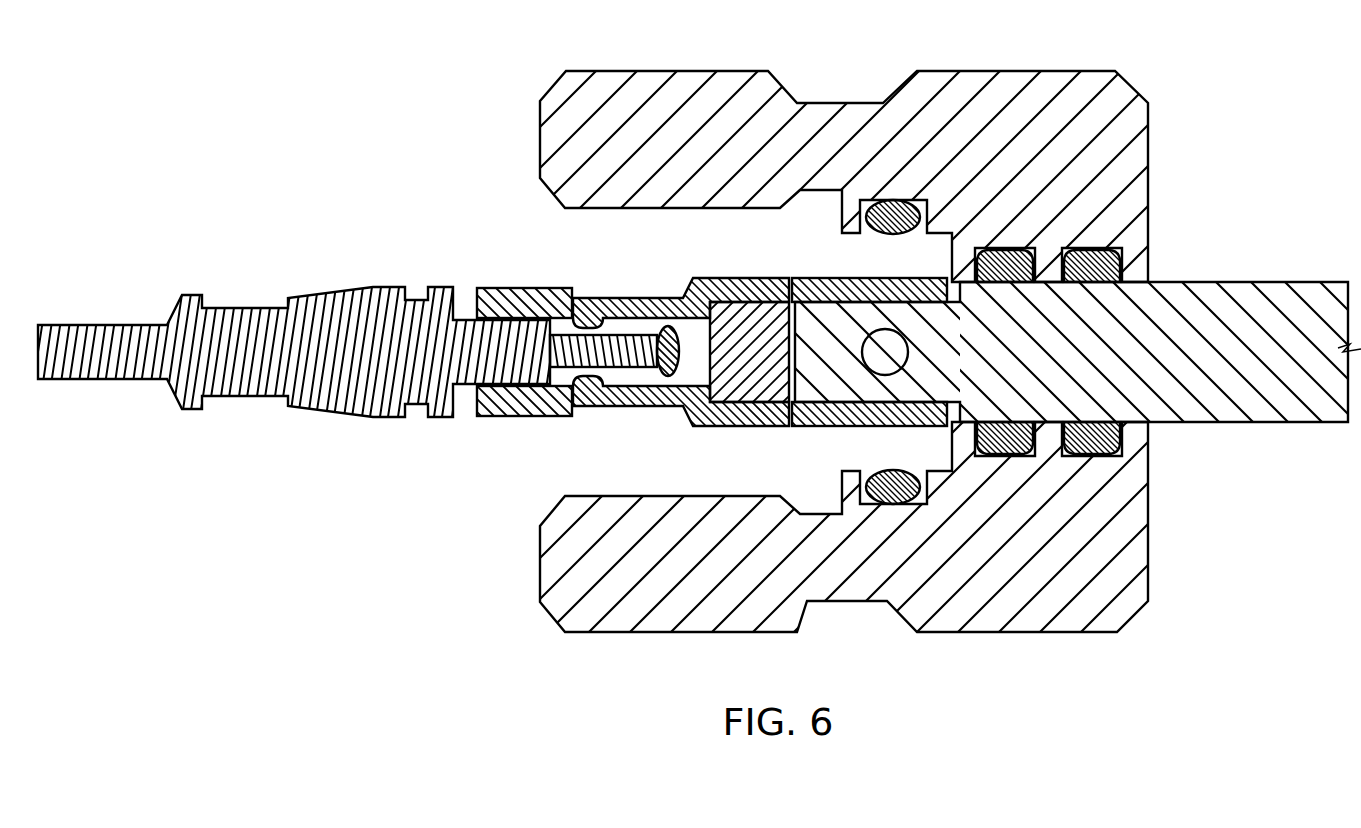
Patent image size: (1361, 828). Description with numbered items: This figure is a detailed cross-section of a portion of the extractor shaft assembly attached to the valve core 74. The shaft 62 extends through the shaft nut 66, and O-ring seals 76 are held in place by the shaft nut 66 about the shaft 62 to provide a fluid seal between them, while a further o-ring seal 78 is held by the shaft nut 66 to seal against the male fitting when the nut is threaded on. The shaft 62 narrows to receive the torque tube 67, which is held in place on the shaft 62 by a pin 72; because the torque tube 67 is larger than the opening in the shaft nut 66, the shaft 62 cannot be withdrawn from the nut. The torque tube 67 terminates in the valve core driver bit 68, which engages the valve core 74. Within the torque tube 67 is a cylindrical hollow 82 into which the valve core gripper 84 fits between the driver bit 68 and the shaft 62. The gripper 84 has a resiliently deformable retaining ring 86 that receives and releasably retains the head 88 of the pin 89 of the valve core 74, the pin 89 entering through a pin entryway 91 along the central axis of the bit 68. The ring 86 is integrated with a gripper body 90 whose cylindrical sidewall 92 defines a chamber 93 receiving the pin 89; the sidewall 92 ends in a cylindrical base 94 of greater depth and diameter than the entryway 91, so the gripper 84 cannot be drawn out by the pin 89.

The shaft 62 is at (1235, 312).
The shaft nut 66 is at (1068, 634).
The torque tube 67 is at (776, 276).
The valve core driver bit 68 is at (503, 416).
The pin 72 is at (906, 376).
The valve core 74 is at (378, 367).
The O-ring seals 76 is at (1005, 248).
The o-ring seal 78 is at (697, 198).
The cylindrical hollow 82 is at (792, 290).
The valve core gripper 84 is at (658, 296).
The resiliently deformable retaining ring 86 is at (598, 387).
The head 88 is at (650, 372).
The pin 89 is at (639, 324).
The gripper body 90 is at (710, 340).
The pin entryway 91 is at (552, 296).
The cylindrical sidewall 92 is at (618, 372).
The chamber 93 is at (600, 296).
The cylindrical base 94 is at (757, 352).